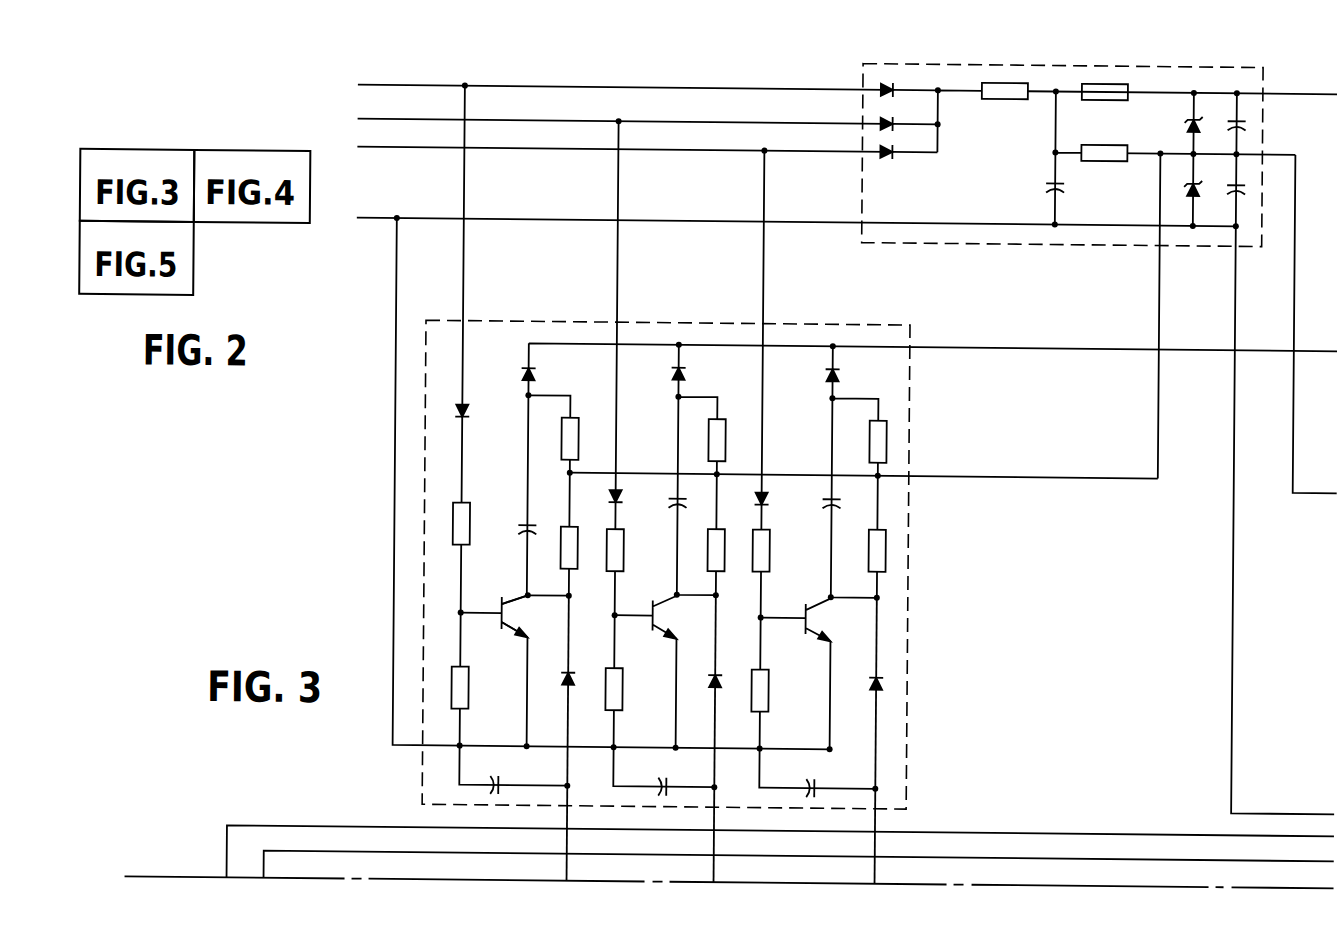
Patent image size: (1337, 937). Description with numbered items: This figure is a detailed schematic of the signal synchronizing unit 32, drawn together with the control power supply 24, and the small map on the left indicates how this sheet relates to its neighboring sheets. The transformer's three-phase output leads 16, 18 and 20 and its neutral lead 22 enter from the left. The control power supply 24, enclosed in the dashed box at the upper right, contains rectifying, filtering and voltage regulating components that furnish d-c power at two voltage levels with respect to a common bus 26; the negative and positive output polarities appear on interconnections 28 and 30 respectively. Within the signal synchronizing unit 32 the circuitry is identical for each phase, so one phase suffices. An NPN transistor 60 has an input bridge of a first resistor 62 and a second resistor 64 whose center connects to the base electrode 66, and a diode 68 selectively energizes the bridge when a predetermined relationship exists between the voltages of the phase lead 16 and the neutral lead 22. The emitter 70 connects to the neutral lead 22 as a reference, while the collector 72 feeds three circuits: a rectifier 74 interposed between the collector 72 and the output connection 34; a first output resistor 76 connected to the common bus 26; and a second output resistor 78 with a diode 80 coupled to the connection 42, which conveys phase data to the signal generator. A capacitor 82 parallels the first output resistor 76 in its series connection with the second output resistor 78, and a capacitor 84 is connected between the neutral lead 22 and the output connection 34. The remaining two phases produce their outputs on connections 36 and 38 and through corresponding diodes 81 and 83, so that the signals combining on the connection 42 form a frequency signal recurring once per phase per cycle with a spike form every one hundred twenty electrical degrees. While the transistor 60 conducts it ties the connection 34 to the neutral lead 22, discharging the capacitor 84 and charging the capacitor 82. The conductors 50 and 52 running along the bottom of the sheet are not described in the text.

The three-phase output lead 16 is at (462, 89).
The three-phase output lead 18 is at (616, 123).
The three-phase output lead 20 is at (762, 151).
The neutral lead 22 is at (395, 222).
The control power supply 24 is at (1103, 63).
The common bus 26 is at (1000, 478).
The interconnection 28 is at (1300, 809).
The interconnection 30 is at (1330, 89).
The signal synchronizing unit 32 is at (909, 630).
The output connection 34 is at (566, 879).
The output connection 36 is at (713, 879).
The output connection 38 is at (875, 880).
The connection 42 is at (1330, 346).
The conductor 50 is at (228, 855).
The conductor 52 is at (270, 868).
The transistor 60 is at (516, 614).
The first resistor 62 is at (472, 522).
The second resistor 64 is at (471, 695).
The base electrode 66 is at (478, 612).
The diode 68 is at (470, 415).
The emitter 70 is at (516, 636).
The collector 72 is at (520, 596).
The rectifier 74 is at (564, 678).
The first output resistor 76 is at (580, 545).
The second output resistor 78 is at (580, 432).
The diode 80 is at (533, 378).
The diode 81 is at (683, 378).
The capacitor 82 is at (534, 528).
The diode 83 is at (838, 378).
The capacitor 84 is at (508, 786).